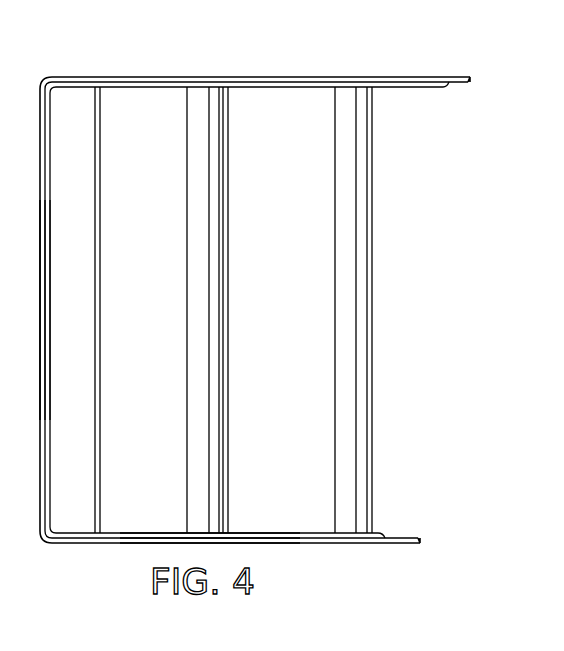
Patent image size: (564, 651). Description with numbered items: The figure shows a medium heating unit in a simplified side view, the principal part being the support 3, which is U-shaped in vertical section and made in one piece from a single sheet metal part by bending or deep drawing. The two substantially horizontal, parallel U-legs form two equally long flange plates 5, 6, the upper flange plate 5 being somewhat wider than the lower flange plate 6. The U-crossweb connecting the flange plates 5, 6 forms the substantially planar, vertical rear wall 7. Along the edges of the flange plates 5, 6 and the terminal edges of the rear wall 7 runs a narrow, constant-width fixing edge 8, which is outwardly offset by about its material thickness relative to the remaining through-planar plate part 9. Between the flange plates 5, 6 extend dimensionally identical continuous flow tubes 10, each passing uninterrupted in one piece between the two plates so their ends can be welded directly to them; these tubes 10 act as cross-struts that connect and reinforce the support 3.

The support 3 is at (239, 275).
The upper flange plate 5 is at (270, 77).
The lower flange plate 6 is at (172, 533).
The rear wall 7 is at (43, 258).
The fixing edge 8 is at (457, 82).
The plate part 9 is at (375, 533).
The continuous flow tube 10 is at (213, 265).